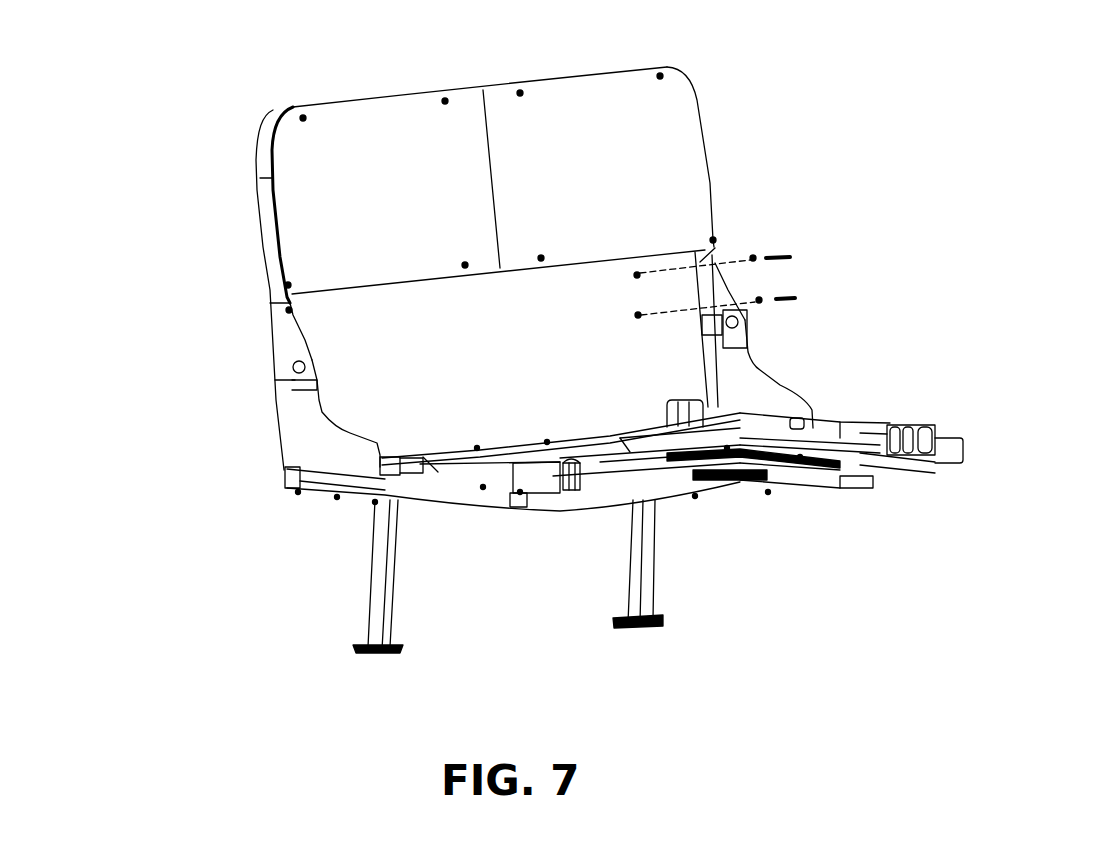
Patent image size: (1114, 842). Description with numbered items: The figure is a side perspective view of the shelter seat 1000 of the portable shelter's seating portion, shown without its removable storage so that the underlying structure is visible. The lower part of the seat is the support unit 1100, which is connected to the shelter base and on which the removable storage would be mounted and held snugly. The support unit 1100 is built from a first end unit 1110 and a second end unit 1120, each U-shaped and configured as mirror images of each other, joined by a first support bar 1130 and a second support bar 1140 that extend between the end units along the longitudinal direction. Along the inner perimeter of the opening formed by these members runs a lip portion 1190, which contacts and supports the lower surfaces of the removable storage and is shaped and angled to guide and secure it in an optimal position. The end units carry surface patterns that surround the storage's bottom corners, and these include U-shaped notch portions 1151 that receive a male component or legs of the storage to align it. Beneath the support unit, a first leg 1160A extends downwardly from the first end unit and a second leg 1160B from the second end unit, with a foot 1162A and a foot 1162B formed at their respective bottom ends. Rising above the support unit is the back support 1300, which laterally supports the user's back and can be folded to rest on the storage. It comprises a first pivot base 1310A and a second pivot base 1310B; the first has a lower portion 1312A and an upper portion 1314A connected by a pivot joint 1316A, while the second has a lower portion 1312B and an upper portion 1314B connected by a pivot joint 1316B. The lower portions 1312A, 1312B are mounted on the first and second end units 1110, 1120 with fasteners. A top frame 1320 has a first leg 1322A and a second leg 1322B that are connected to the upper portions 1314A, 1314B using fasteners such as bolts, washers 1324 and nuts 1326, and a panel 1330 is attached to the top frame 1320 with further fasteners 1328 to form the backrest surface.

The shelter seat 1000 is at (685, 67).
The support unit 1100 is at (287, 477).
The first end unit 1110 is at (908, 460).
The second end unit 1120 is at (327, 480).
The first support bar 1130 is at (772, 474).
The second support bar 1140 is at (490, 458).
The notch portion 1151 is at (937, 432).
The first leg 1160A is at (652, 572).
The second leg 1160B is at (375, 560).
The foot 1162A is at (663, 623).
The foot 1162B is at (357, 647).
The lip portion 1190 is at (821, 442).
The back support 1300 is at (273, 122).
The first pivot base 1310A is at (740, 353).
The second pivot base 1310B is at (275, 387).
The lower portion 1312A is at (777, 391).
The lower portion 1312B is at (297, 442).
The upper portion 1314A is at (740, 285).
The upper portion 1314B is at (278, 333).
The pivot joint 1316A is at (740, 317).
The pivot joint 1316B is at (293, 368).
The top frame 1320 is at (270, 262).
The first leg 1322A is at (715, 235).
The second leg 1322B is at (292, 300).
The washer 1324 is at (793, 257).
The nut 1326 is at (753, 257).
The fastener 1328 is at (630, 278).
The panel 1330 is at (667, 128).